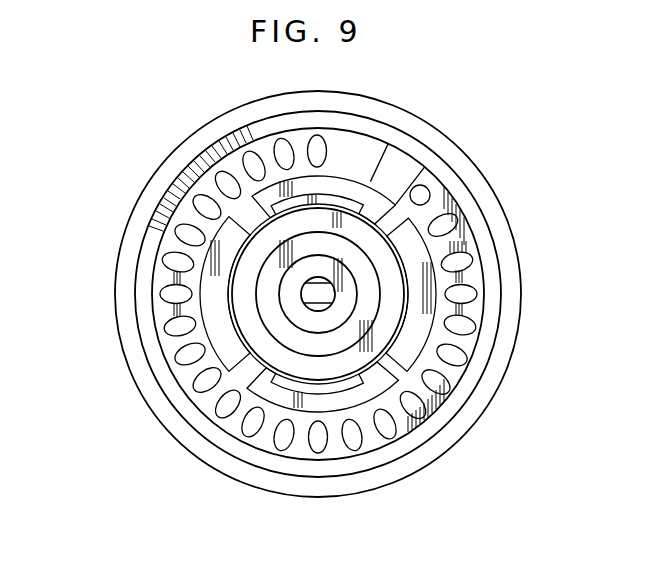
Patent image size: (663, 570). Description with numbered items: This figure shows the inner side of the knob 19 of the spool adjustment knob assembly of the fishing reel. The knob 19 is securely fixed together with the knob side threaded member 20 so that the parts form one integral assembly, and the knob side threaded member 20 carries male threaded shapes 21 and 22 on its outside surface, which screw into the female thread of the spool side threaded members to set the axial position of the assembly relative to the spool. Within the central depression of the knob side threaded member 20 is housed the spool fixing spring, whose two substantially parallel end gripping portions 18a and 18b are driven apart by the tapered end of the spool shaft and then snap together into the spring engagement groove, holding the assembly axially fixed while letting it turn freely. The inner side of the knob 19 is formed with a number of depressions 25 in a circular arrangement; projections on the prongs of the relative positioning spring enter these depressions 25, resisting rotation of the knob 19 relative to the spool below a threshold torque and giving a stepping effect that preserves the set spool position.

The end gripping portion 18a is at (431, 281).
The end gripping portion 18b is at (214, 295).
The knob 19 is at (222, 125).
The knob side threaded member 20 is at (273, 360).
The male threaded shape 21 is at (345, 205).
The male threaded shape 22 is at (285, 383).
The depressions 25 is at (187, 238).